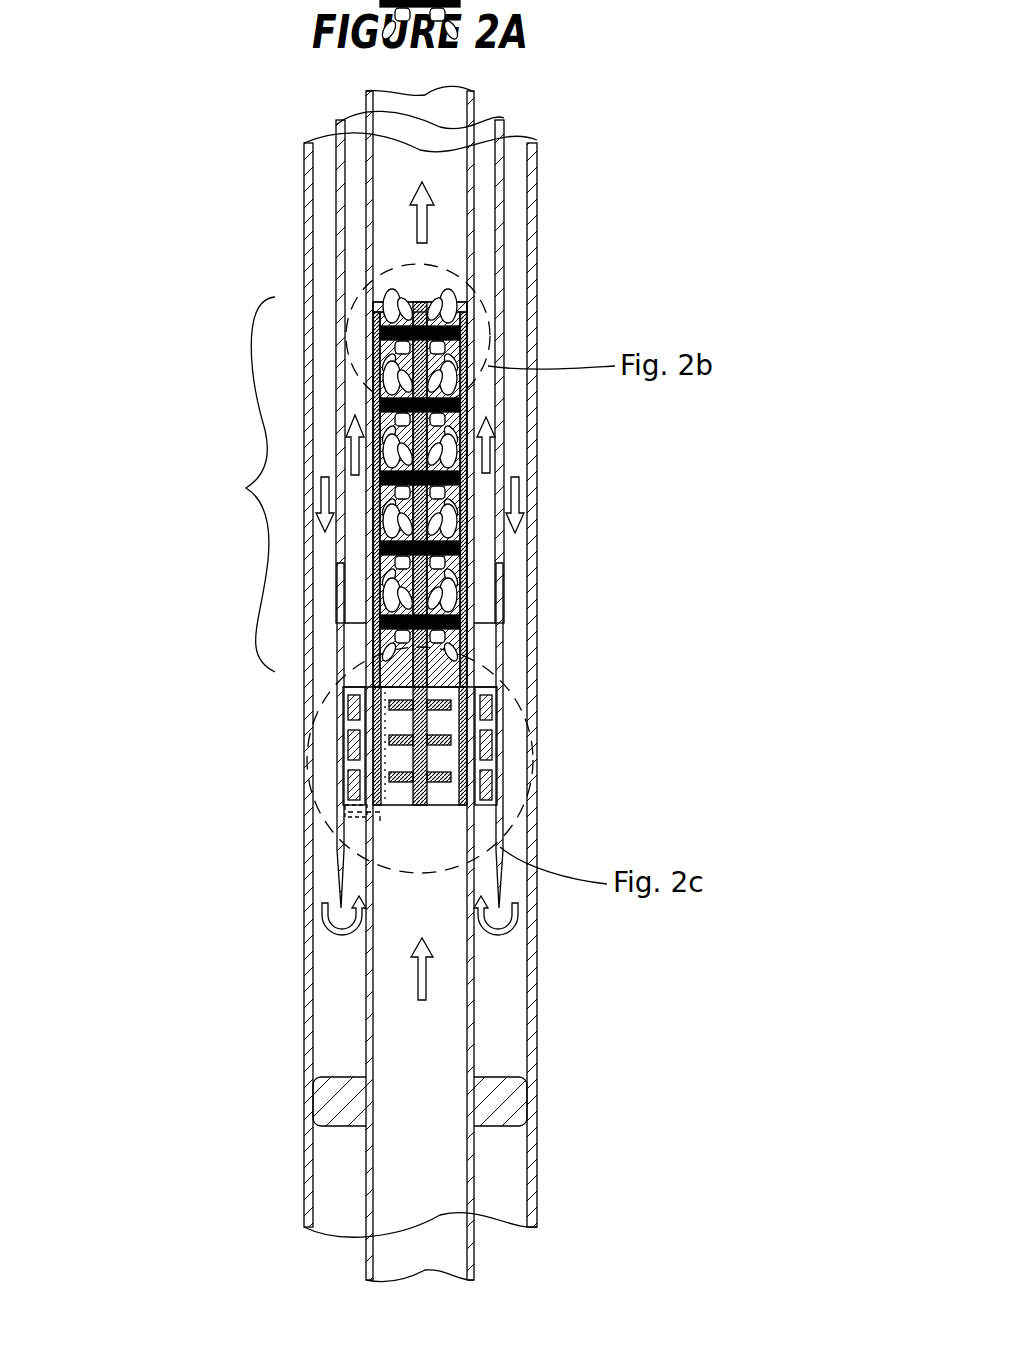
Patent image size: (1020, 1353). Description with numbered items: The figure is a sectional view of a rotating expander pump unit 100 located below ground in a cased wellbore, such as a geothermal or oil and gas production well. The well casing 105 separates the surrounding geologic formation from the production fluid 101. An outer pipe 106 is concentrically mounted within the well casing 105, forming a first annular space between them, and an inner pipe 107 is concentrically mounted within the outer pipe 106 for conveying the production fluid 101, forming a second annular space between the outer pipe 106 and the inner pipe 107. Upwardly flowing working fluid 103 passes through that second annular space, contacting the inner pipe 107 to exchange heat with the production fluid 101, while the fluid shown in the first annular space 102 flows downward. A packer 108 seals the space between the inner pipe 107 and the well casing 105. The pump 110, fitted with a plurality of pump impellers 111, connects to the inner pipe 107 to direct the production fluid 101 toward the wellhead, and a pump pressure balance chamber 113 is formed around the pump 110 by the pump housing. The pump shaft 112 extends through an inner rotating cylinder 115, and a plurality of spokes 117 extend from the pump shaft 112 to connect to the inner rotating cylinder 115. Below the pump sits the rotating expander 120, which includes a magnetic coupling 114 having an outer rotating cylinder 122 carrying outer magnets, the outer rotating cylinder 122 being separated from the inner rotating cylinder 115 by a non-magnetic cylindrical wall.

The rotating expander pump unit 100 is at (181, 226).
The production fluid 101 is at (423, 987).
The annulus between casing and shroud 102 is at (517, 485).
The upwardly flowing working fluid 103 is at (493, 440).
The well casing 105 is at (531, 245).
The outer pipe 106 is at (500, 298).
The inner pipe 107 is at (470, 330).
The packer 108 is at (513, 1092).
The pump 110 is at (231, 484).
The pump impellers 111 is at (443, 610).
The pump shaft 112 is at (365, 700).
The pump pressure balance chamber 113 is at (397, 300).
The magnetic coupling 114 is at (355, 815).
The inner rotating cylinder 115 is at (484, 748).
The spokes 117 is at (487, 850).
The rotating expander 120 is at (488, 718).
The outer rotating cylinder 122 is at (484, 778).